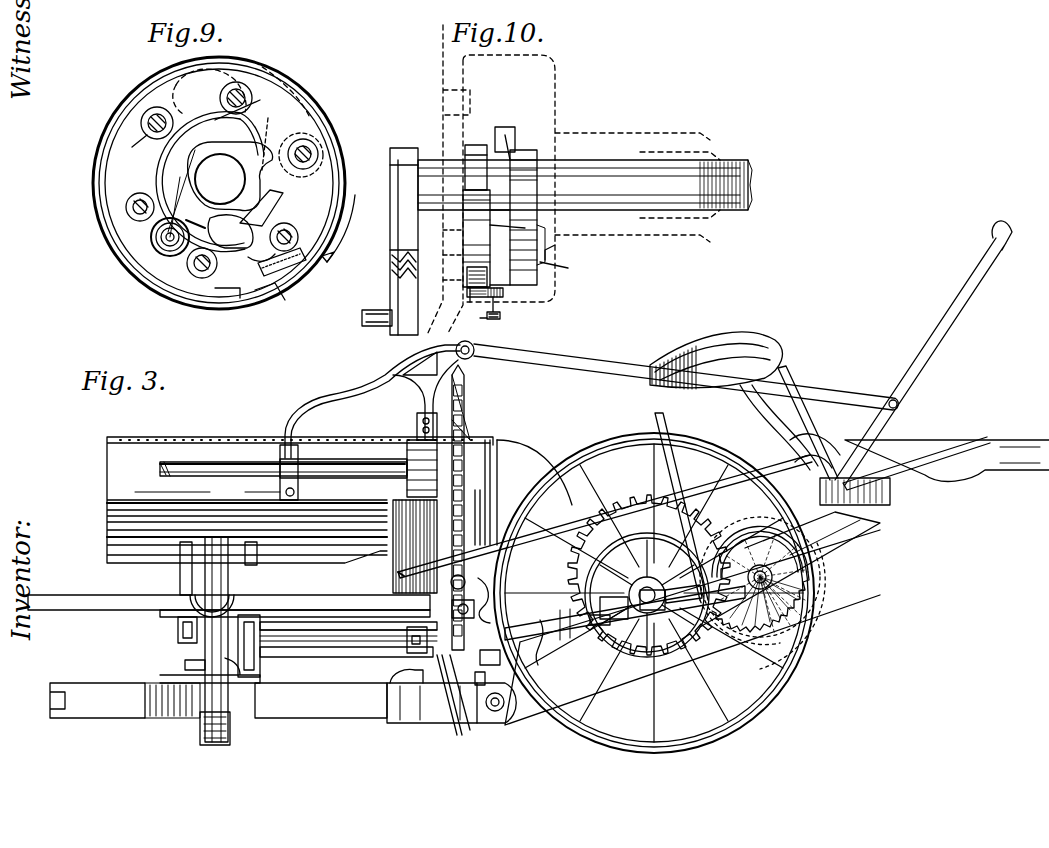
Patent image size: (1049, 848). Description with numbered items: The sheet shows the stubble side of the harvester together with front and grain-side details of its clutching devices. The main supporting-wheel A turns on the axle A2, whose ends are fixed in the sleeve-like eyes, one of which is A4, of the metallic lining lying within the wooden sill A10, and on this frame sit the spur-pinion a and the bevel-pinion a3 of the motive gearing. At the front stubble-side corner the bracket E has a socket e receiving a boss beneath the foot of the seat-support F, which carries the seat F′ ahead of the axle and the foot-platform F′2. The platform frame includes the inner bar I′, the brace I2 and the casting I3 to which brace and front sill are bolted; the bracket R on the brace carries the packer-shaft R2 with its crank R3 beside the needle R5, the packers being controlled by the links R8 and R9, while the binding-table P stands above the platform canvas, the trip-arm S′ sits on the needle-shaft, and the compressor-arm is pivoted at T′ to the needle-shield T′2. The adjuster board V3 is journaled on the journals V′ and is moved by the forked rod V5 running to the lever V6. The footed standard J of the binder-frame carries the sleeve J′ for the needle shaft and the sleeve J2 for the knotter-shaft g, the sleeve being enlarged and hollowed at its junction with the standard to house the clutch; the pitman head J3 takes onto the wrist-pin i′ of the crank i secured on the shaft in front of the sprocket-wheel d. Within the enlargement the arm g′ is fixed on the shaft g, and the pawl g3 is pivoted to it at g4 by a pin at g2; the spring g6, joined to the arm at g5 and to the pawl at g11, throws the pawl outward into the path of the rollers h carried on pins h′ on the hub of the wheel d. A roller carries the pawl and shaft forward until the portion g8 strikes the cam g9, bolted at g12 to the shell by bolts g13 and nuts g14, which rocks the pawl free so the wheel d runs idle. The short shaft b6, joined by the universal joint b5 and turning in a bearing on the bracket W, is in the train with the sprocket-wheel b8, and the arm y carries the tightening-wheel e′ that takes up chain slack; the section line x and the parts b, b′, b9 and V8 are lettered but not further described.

In FIG. 9, the knotter-shaft g is at (220, 179).
In FIG. 10, the knotter-shaft g is at (585, 185).
In FIG. 3, the knotter-shaft g is at (283, 479).
In FIG. 9, the arm g′ is at (170, 200).
In FIG. 10, the arm g′ is at (517, 217).
In FIG. 9, the pivot pin g2 is at (175, 245).
In FIG. 10, the pivot pin g2 is at (560, 271).
In FIG. 9, the pawl g3 is at (241, 144).
In FIG. 10, the pawl g3 is at (476, 232).
In FIG. 9, the pawl pivot g4 is at (163, 250).
In FIG. 10, the pawl pivot g4 is at (467, 278).
In FIG. 9, the spring connection g5 is at (270, 152).
In FIG. 10, the spring connection g5 is at (514, 132).
In FIG. 9, the spring g6 is at (225, 116).
In FIG. 10, the spring g6 is at (504, 136).
In FIG. 9, the pawl portion g8 is at (261, 259).
In FIG. 9, the cam g9 is at (227, 289).
In FIG. 10, the cam g9 is at (468, 292).
In FIG. 10, the spring connection g11 is at (525, 228).
In FIG. 9, the inner surface of shell g12 is at (282, 262).
In FIG. 10, the inner surface of shell g12 is at (497, 294).
In FIG. 9, the bolts g13 is at (302, 260).
In FIG. 10, the bolts g13 is at (505, 313).
In FIG. 9, the nuts g14 is at (284, 299).
In FIG. 10, the nuts g14 is at (479, 325).
In FIG. 9, the rollers h is at (218, 190).
In FIG. 10, the rollers h is at (476, 174).
In FIG. 9, the pins h′ is at (134, 145).
In FIG. 10, the pins h′ is at (452, 184).
In FIG. 10, the crank i is at (404, 241).
In FIG. 10, the wrist-pin i′ is at (378, 310).
In FIG. 10, the sprocket-wheel d is at (443, 42).
In FIG. 3, the sprocket-wheel d is at (467, 422).
In FIG. 3, the footed standard J is at (406, 669).
In FIG. 3, the sleeve J′ is at (422, 480).
In FIG. 10, the sleeve J2 is at (567, 251).
In FIG. 3, the sleeve J2 is at (343, 468).
In FIG. 3, the pitman head J3 is at (370, 422).
In FIG. 3, the section line x is at (465, 515).
In FIG. 3, the main supporting-wheel A is at (654, 593).
In FIG. 3, the axle A2 is at (628, 589).
In FIG. 3, the sleeve-like eye A4 is at (625, 612).
In FIG. 3, the wooden sill A10 is at (692, 627).
In FIG. 3, the spur-pinion a is at (760, 577).
In FIG. 3, the bevel-pinion a3 is at (769, 606).
In FIG. 3, the lever b is at (475, 670).
In FIG. 3, the block b′ is at (473, 666).
In FIG. 3, the universal joint b5 is at (579, 632).
In FIG. 3, the short shaft b6 is at (510, 626).
In FIG. 3, the sprocket-wheel b8 is at (444, 701).
In FIG. 3, the pin b9 is at (460, 711).
In FIG. 3, the socket e is at (855, 508).
In FIG. 3, the tightening-wheel e′ is at (466, 580).
In FIG. 3, the arm y is at (476, 605).
In FIG. 3, the bracket E is at (790, 569).
In FIG. 3, the seat-support F is at (833, 410).
In FIG. 3, the seat F′ is at (734, 401).
In FIG. 3, the foot-platform F′2 is at (958, 437).
In FIG. 3, the journals V′ is at (393, 540).
In FIG. 3, the board V3 is at (385, 569).
In FIG. 3, the forked rod V5 is at (605, 516).
In FIG. 3, the lever V6 is at (807, 436).
In FIG. 3, the link V8 is at (804, 452).
In FIG. 3, the bracket W is at (403, 640).
In FIG. 3, the inner bar I′ is at (97, 700).
In FIG. 3, the brace I2 is at (266, 700).
In FIG. 3, the casting I3 is at (451, 703).
In FIG. 3, the binding-table P is at (229, 597).
In FIG. 3, the pivot T′ is at (228, 582).
In FIG. 3, the needle-shield T′2 is at (225, 731).
In FIG. 3, the trip-arm S′ is at (245, 578).
In FIG. 3, the bracket R is at (210, 670).
In FIG. 3, the packer-shaft R2 is at (346, 659).
In FIG. 3, the crank R3 is at (348, 650).
In FIG. 3, the needle R5 is at (166, 667).
In FIG. 3, the link R8 is at (250, 645).
In FIG. 3, the link R9 is at (185, 630).